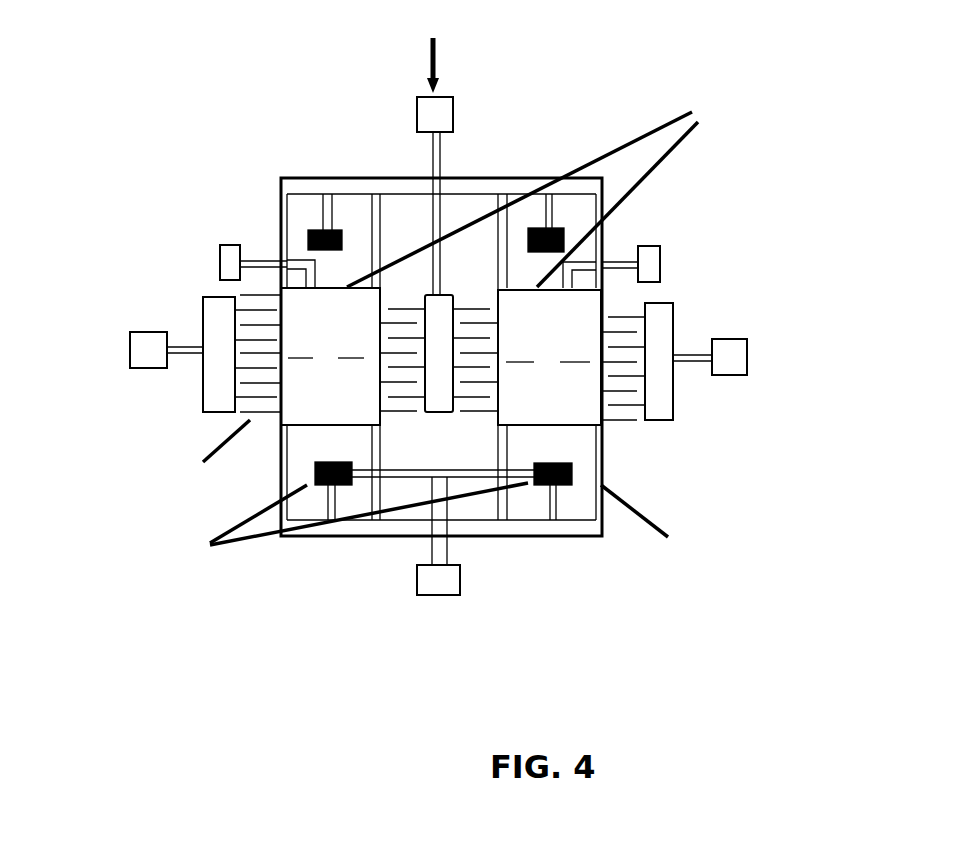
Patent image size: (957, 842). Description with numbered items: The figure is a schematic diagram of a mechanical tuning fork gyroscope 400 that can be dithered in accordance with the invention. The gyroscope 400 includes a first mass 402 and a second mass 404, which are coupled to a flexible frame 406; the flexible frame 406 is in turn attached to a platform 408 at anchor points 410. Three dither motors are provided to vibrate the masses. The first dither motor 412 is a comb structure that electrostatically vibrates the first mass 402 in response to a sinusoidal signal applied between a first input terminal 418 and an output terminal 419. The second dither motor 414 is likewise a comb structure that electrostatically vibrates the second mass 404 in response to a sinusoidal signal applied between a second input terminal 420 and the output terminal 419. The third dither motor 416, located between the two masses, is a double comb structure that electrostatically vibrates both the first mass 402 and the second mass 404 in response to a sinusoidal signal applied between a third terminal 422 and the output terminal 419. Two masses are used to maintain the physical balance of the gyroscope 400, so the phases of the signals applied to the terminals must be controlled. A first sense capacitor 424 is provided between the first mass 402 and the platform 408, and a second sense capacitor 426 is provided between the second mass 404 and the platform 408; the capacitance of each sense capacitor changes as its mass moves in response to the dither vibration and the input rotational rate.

The mechanical tuning fork gyroscope 400 is at (214, 78).
The first mass 402 is at (357, 416).
The second mass 404 is at (570, 414).
The flexible frame 406 is at (597, 457).
The platform 408 is at (376, 134).
The anchor points 410 is at (308, 232).
The first dither motor 412 is at (253, 383).
The second dither motor 414 is at (612, 317).
The third dither motor 416 is at (470, 323).
The first input terminal 418 is at (137, 332).
The output terminal 419 is at (435, 588).
The second input terminal 420 is at (723, 373).
The third terminal 422 is at (447, 108).
The first sense capacitor 424 is at (333, 287).
The second sense capacitor 426 is at (512, 287).